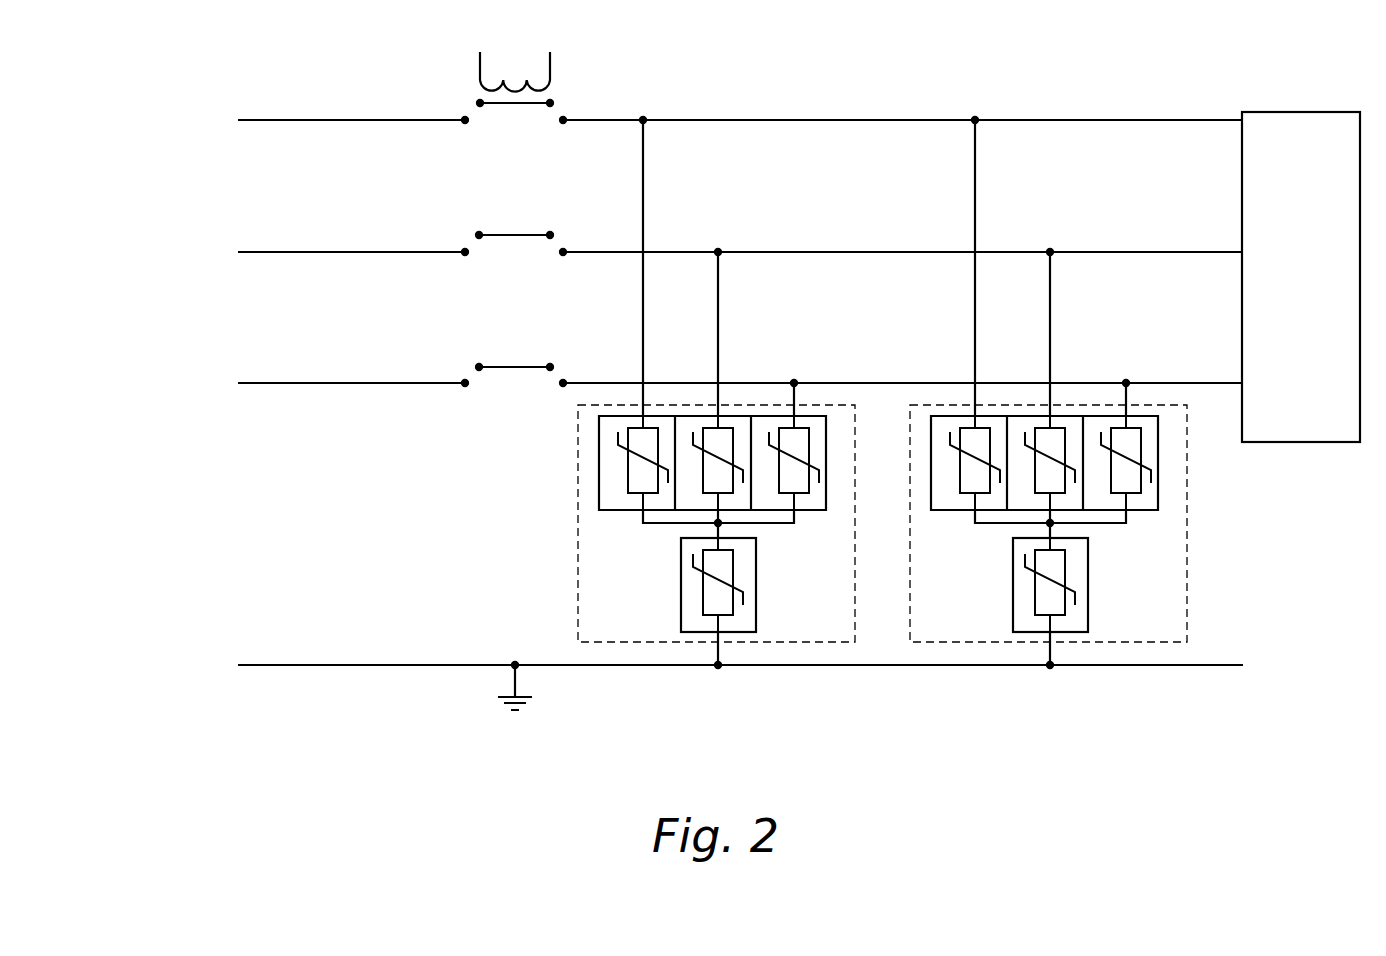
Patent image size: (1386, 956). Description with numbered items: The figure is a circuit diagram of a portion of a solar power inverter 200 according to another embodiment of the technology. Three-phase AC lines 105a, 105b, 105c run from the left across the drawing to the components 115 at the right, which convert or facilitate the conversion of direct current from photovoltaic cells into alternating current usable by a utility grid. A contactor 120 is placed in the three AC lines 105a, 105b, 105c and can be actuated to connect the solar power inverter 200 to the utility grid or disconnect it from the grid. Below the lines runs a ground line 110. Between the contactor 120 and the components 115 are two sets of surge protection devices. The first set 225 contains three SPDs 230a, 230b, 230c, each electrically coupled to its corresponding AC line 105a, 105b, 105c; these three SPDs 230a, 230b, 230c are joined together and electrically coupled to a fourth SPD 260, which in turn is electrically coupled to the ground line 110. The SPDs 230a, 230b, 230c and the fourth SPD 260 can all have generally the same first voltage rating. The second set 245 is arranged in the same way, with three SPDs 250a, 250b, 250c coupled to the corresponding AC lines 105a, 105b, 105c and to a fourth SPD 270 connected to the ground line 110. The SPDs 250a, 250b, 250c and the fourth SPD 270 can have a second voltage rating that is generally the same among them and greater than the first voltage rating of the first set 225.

The AC line 105a is at (200, 122).
The AC line 105b is at (200, 254).
The AC line 105c is at (200, 385).
The ground line 110 is at (188, 667).
The components 115 is at (1296, 112).
The contactor 120 is at (553, 63).
The solar power inverter 200 is at (492, 726).
The first set of SPDs 225 is at (669, 523).
The SPD 230a is at (613, 415).
The SPD 230b is at (689, 415).
The SPD 230c is at (765, 415).
The second set of SPDs 245 is at (1098, 523).
The SPD 250a is at (945, 415).
The SPD 250b is at (1021, 415).
The SPD 250c is at (1097, 415).
The fourth SPD 260 is at (688, 633).
The fourth SPD 270 is at (1020, 633).